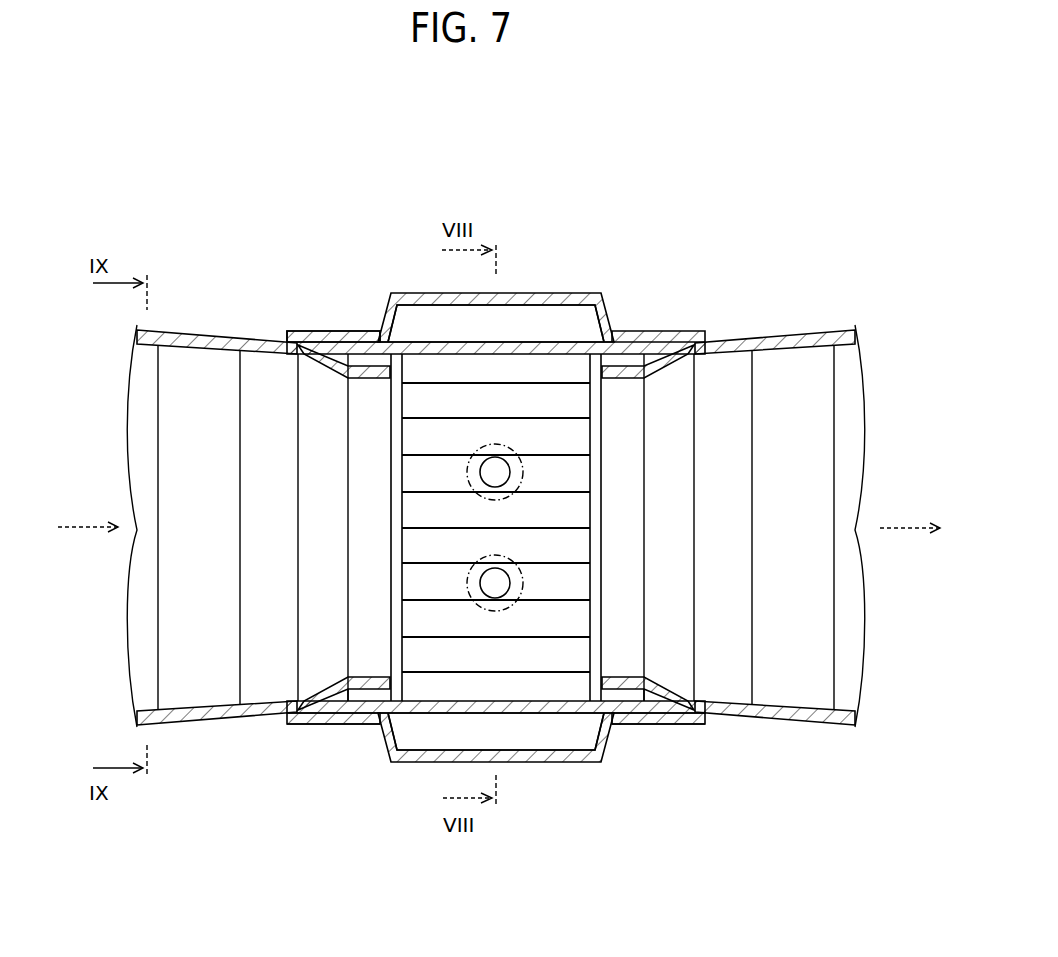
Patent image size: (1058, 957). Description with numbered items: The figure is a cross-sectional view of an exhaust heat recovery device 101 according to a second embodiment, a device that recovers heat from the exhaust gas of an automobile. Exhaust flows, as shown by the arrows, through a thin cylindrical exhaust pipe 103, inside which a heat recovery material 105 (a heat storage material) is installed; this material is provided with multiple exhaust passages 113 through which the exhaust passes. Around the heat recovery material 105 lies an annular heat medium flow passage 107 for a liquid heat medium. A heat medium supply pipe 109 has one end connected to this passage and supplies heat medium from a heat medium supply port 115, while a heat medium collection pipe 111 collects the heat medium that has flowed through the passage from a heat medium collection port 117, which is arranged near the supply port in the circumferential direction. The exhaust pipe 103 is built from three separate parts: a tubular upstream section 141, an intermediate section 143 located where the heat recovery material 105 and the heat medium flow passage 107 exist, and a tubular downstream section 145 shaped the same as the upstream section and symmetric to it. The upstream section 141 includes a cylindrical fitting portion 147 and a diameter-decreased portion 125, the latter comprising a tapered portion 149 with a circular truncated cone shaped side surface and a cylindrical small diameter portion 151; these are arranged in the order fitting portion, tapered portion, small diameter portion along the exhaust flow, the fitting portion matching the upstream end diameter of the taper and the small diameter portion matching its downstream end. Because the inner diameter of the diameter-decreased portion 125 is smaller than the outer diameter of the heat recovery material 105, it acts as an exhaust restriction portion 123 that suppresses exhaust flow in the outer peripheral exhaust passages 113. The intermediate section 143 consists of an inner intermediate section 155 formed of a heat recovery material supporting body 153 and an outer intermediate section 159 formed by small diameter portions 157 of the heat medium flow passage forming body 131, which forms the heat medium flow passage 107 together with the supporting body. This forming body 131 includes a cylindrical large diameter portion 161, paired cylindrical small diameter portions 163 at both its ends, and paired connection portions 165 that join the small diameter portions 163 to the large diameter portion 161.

The exhaust heat recovery device 101 is at (617, 260).
The exhaust pipe 103 is at (197, 330).
The heat recovery material 105 is at (531, 414).
The heat medium flow passage 107 is at (477, 468).
The heat medium supply pipe 109 is at (563, 763).
The heat medium collection pipe 111 is at (496, 446).
The exhaust passages 113 is at (567, 445).
The heat medium supply port 115 is at (455, 715).
The heat medium collection port 117 is at (420, 312).
The exhaust restriction portion 123 is at (337, 712).
The diameter-decreased portion 125 is at (313, 331).
The heat medium flow passage forming body 131 is at (447, 293).
The upstream section 141 is at (195, 726).
The intermediate section 143 is at (527, 587).
The downstream section 145 is at (810, 332).
The fitting portion 147 is at (270, 726).
The tapered portion 149 is at (322, 688).
The small diameter portion 151 is at (370, 675).
The heat recovery material supporting body 153 is at (465, 716).
The inner intermediate section 155 is at (470, 592).
The small diameter portions 157 is at (550, 261).
The outer intermediate section 159 is at (326, 342).
The large diameter portion 161 is at (527, 764).
The small diameter portions 163 is at (355, 727).
The connection portions 165 is at (362, 727).